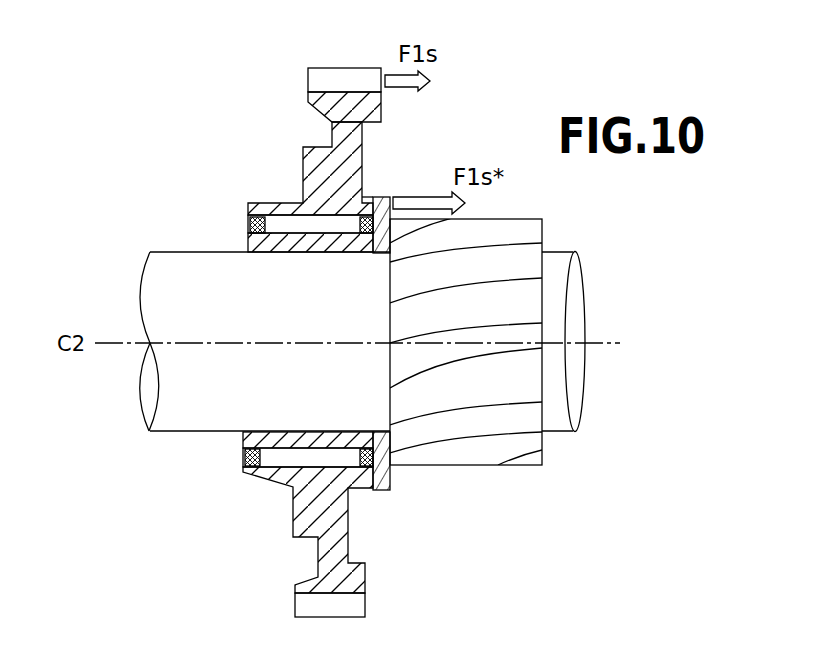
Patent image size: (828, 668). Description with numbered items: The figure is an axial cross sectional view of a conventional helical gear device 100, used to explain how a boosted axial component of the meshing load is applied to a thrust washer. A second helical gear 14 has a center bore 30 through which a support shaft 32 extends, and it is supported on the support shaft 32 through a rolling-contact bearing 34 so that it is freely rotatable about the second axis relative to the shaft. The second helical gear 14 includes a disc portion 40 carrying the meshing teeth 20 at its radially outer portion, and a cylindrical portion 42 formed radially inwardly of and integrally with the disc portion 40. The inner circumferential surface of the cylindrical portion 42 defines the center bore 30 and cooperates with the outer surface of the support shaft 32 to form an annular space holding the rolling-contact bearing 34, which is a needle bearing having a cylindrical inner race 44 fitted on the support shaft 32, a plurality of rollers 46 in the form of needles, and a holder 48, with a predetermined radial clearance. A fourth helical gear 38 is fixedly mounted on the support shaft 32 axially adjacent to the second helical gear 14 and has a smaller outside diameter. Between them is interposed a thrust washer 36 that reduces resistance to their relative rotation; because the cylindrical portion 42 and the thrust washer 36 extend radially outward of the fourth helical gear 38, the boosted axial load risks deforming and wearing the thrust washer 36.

The conventional helical gear device 100 is at (520, 74).
The second helical gear 14 is at (278, 72).
The meshing teeth 20 is at (351, 78).
The disc portion 40 is at (333, 132).
The cylindrical portion 42 is at (285, 473).
The center bore 30 is at (285, 214).
The rolling-contact bearing 34 is at (232, 235).
The rollers 46 is at (343, 462).
The holder 48 is at (245, 222).
The inner race 44 is at (247, 436).
The thrust washer 36 is at (382, 199).
The fourth helical gear 38 is at (493, 440).
The support shaft 32 is at (177, 420).